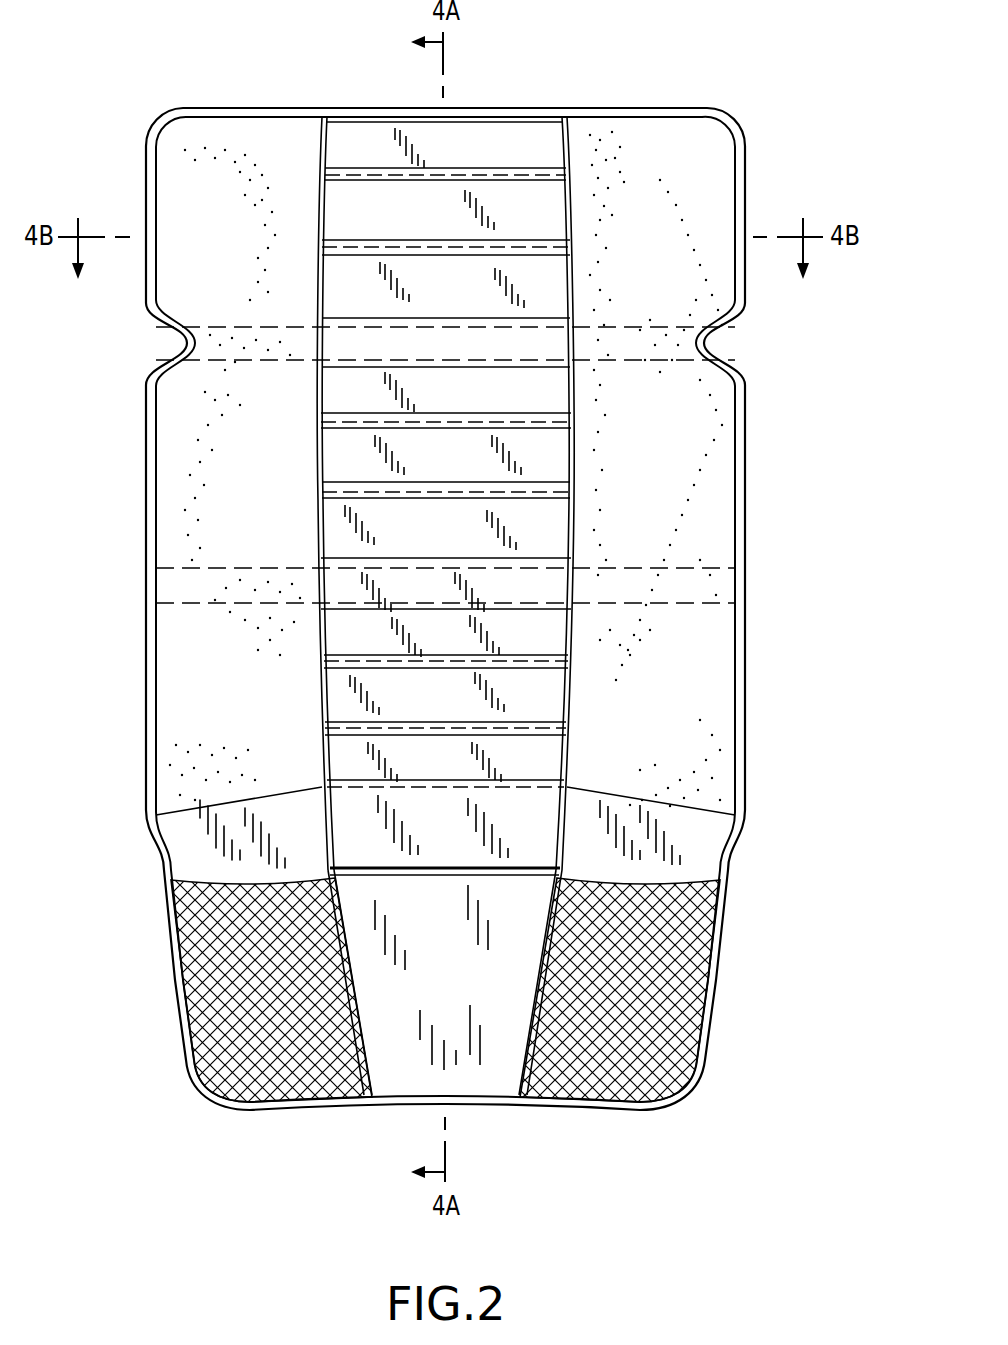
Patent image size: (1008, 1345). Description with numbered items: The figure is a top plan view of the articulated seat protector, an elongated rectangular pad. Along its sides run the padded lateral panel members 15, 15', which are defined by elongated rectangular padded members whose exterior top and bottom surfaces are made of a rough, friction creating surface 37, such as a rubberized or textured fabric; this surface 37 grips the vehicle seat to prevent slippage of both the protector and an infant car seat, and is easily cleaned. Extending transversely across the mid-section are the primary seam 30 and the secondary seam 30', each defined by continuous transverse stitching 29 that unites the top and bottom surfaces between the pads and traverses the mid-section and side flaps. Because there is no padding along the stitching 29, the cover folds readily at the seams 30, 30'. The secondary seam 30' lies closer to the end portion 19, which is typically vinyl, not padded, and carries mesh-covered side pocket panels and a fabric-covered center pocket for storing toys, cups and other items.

The padded lateral panel member 15 is at (445, 573).
The padded lateral panel member 15' is at (398, 609).
The friction creating surface 37 is at (680, 183).
The transverse stitching 29 is at (680, 325).
The primary seam 30 is at (576, 342).
The secondary seam 30' is at (579, 583).
The end portion 19 is at (495, 1067).